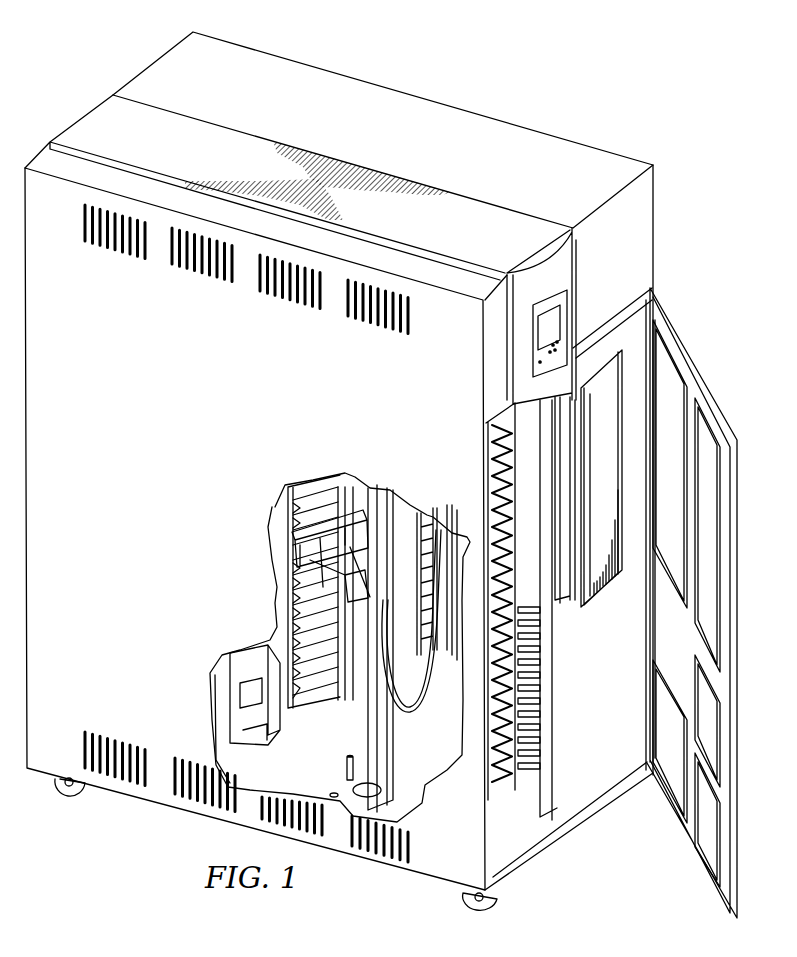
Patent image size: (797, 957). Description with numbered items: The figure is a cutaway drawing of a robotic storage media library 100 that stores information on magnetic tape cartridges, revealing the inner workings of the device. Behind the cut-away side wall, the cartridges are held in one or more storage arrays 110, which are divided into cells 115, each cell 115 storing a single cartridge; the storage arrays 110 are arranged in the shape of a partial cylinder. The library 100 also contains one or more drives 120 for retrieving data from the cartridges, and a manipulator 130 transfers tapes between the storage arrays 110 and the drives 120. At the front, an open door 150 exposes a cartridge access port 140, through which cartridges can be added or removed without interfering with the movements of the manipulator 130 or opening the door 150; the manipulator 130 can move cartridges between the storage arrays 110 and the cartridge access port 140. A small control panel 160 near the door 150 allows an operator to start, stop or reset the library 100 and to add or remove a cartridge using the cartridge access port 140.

The robotic storage media library 100 is at (421, 97).
The storage array 110 is at (305, 714).
The cell 115 is at (297, 601).
The drive 120 is at (250, 737).
The manipulator 130 is at (418, 763).
The cartridge access port 140 is at (612, 580).
The door 150 is at (684, 340).
The control panel 160 is at (555, 313).